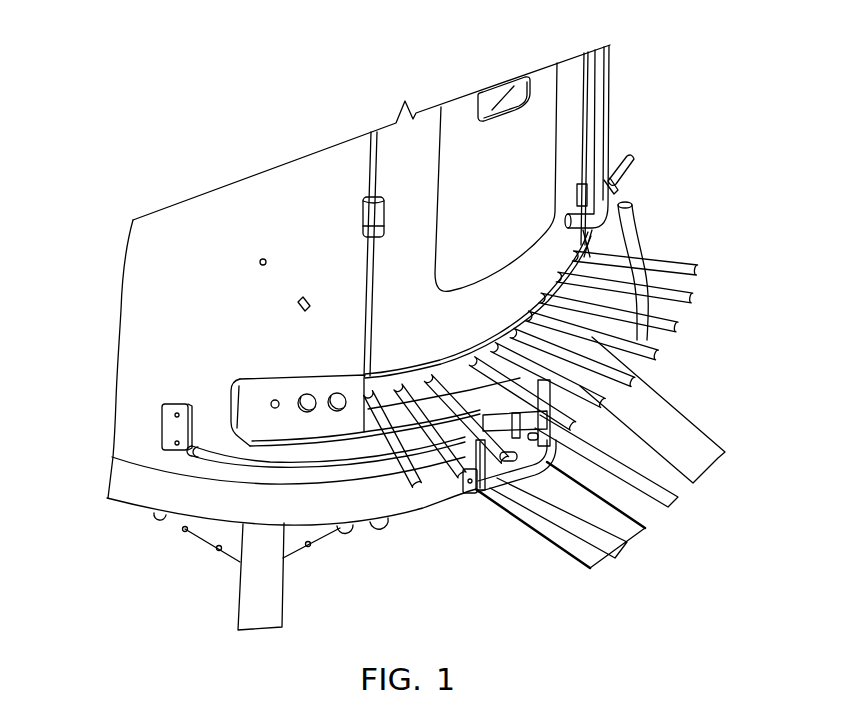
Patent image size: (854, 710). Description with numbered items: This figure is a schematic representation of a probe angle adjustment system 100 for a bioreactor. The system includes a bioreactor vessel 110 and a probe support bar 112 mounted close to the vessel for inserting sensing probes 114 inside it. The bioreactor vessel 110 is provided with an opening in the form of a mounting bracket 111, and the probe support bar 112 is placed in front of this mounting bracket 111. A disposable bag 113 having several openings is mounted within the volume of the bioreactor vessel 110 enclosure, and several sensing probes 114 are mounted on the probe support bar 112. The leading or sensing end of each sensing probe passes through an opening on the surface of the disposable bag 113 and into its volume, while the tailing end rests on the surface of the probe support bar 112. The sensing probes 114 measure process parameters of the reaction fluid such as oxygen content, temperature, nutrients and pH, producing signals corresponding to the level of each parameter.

The probe angle adjustment system 100 is at (333, 88).
The bioreactor vessel 110 is at (250, 252).
The mounting bracket 111 is at (273, 432).
The probe support bar 112 is at (193, 455).
The disposable bag 113 is at (450, 375).
The sensing probes 114 is at (688, 260).